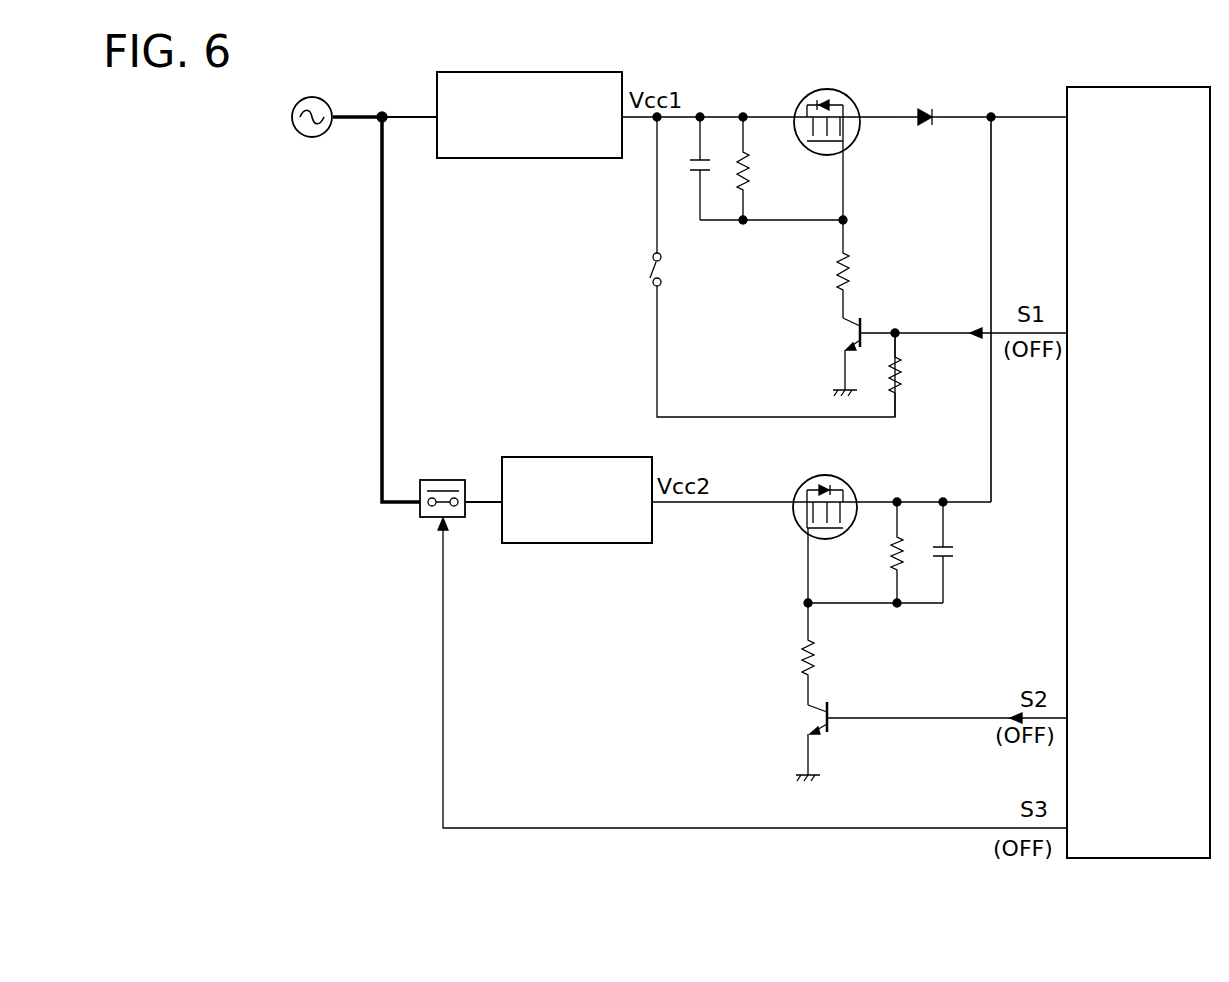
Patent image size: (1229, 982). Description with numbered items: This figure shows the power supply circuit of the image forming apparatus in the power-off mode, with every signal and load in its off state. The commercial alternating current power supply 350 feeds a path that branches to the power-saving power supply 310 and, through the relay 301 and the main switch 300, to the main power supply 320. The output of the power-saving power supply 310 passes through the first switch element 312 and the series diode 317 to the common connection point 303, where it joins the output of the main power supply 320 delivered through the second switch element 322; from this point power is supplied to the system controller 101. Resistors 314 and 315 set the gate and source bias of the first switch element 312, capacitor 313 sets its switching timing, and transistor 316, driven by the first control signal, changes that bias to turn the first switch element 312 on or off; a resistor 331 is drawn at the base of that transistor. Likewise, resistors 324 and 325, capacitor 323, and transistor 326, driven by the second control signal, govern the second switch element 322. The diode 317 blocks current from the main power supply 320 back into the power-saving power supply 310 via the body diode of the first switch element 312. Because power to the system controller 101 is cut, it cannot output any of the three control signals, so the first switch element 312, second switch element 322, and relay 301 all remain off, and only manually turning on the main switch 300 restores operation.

The system controller 101 is at (1140, 87).
The main switch 300 is at (668, 267).
The relay 301 is at (445, 480).
The common connection point 303 is at (1013, 289).
The power-saving power supply 310 is at (578, 58).
The first switch element 312 is at (838, 90).
The capacitor 313 is at (691, 166).
The resistor 314 is at (751, 172).
The resistor 315 is at (877, 255).
The transistor 316 is at (862, 321).
The diode 317 is at (930, 108).
The main power supply 320 is at (592, 443).
The second switch element 322 is at (830, 478).
The capacitor 323 is at (957, 550).
The resistor 324 is at (892, 560).
The resistor 325 is at (820, 658).
The transistor 326 is at (853, 694).
The resistor 331 is at (904, 378).
The commercial alternating current power supply 350 is at (320, 97).